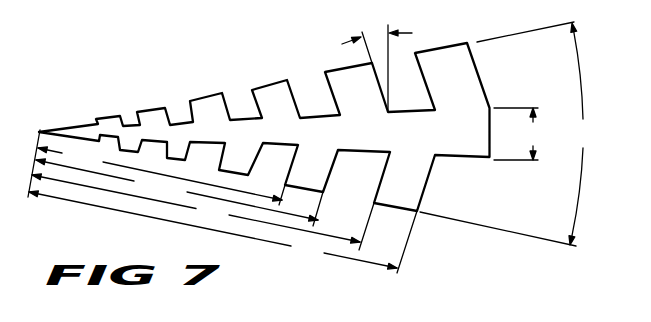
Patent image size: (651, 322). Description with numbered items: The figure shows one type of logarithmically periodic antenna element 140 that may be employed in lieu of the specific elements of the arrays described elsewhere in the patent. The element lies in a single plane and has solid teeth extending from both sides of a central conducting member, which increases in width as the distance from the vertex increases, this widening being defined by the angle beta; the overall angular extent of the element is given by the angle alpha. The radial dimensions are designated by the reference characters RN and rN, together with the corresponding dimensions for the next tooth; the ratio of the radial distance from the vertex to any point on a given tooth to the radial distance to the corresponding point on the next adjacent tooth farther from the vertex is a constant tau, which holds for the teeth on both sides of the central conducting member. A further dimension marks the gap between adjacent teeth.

The stepped tapered toothed member 140 is at (462, 147).
The radial dimension rN is at (203, 212).
The radial dimension RN is at (223, 232).